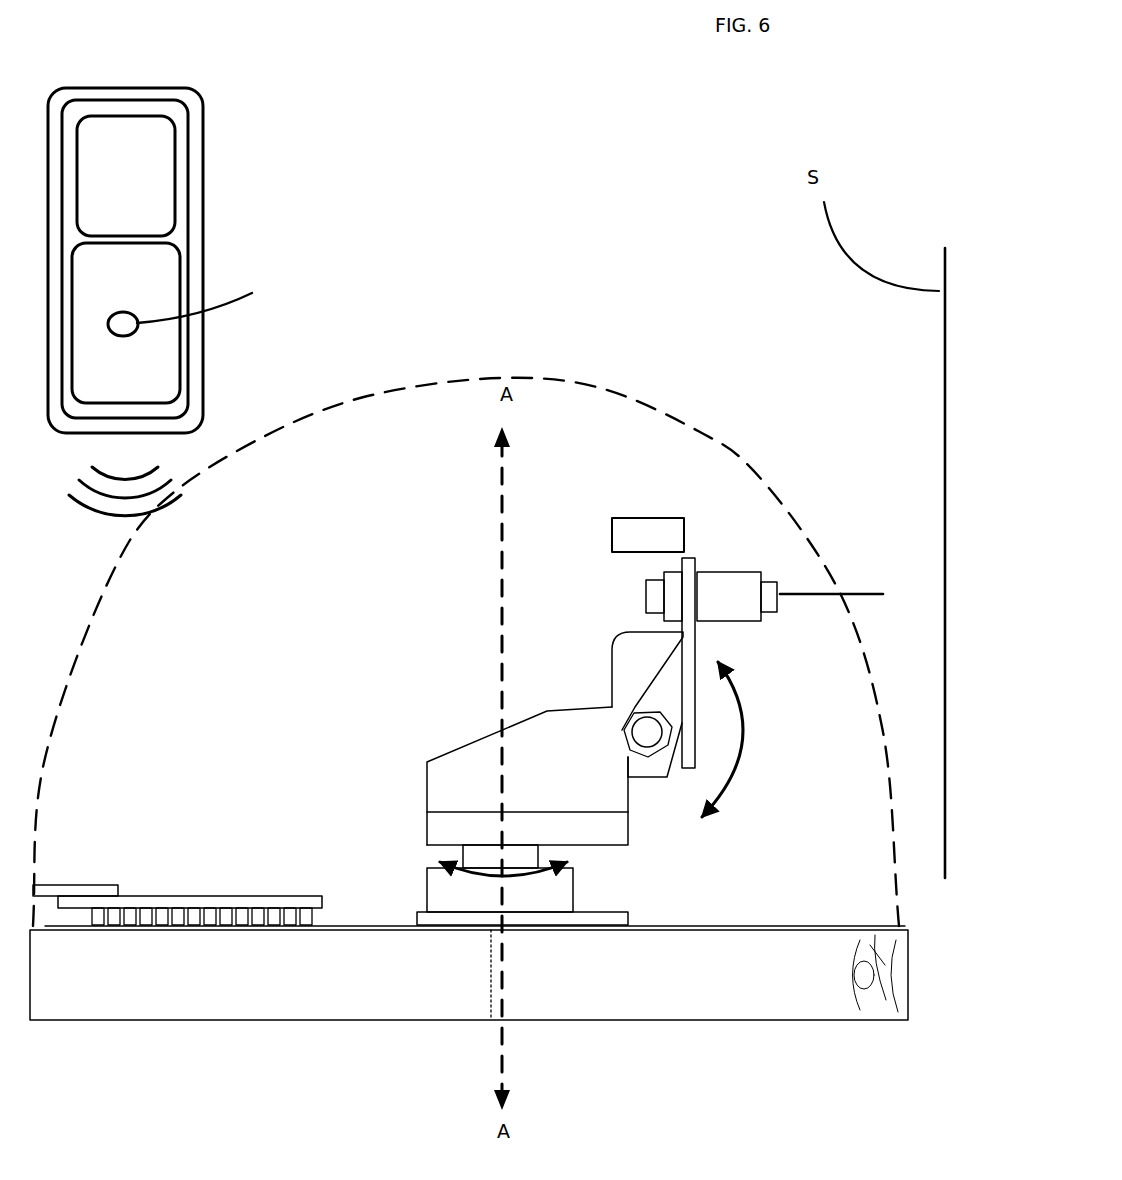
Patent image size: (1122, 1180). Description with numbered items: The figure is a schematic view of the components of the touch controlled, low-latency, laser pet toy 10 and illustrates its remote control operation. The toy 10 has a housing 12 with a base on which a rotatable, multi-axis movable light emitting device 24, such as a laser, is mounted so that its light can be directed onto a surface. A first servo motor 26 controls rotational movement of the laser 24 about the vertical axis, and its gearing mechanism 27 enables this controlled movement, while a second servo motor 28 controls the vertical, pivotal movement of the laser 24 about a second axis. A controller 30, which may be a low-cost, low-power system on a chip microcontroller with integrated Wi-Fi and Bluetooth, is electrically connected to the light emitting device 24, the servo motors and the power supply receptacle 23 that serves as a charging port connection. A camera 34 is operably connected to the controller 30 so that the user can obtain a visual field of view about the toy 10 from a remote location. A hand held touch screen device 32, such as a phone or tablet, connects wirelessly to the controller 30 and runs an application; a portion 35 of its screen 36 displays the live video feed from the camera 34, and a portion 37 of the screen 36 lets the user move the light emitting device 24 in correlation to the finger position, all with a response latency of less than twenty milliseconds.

The touch controlled, low-latency, laser pet toy 10 is at (490, 185).
The housing 12 is at (558, 1015).
The power supply receptacle 23 is at (94, 883).
The light emitting device 24 is at (727, 572).
The first servo motor 26 is at (425, 869).
The gearing mechanism 27 is at (473, 857).
The second servo motor 28 is at (610, 687).
The controller 30 is at (250, 896).
The touch screen device 32 is at (202, 118).
The camera 34 is at (650, 518).
The portion of screen 35 is at (126, 176).
The screen 36 is at (98, 107).
The portion of screen 37 is at (126, 323).